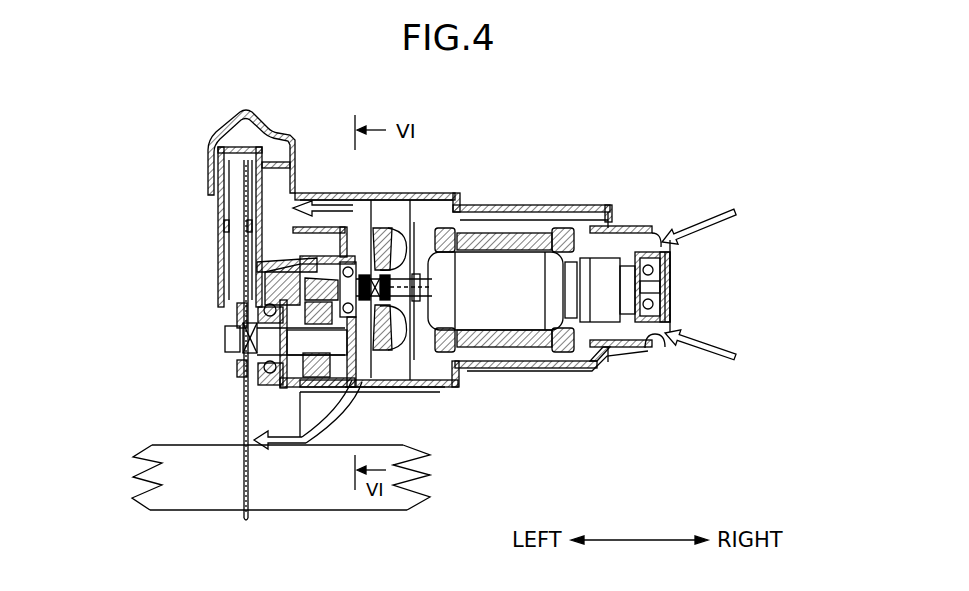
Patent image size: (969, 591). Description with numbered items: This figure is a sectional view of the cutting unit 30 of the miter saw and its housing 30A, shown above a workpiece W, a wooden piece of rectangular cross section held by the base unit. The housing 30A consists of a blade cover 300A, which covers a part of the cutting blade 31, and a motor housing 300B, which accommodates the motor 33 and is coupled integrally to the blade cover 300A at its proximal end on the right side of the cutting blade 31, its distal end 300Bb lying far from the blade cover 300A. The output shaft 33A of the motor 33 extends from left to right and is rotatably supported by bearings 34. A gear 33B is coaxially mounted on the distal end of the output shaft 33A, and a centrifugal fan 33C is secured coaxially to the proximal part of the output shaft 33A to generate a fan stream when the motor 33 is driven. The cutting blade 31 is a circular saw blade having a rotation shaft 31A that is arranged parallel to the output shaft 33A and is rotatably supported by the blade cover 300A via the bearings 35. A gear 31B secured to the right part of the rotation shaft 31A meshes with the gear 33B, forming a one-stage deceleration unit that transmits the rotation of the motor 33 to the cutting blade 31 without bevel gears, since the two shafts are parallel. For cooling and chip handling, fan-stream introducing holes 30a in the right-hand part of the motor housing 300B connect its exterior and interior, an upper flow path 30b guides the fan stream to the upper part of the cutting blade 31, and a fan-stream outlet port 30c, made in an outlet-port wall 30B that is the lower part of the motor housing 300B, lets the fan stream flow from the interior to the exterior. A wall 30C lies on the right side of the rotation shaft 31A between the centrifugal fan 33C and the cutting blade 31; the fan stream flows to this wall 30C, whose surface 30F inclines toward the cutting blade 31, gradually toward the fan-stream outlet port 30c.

The cutting unit 30 is at (635, 121).
The blade cover 300A is at (230, 113).
The upper flow path 30b is at (348, 250).
The bearings 34 is at (342, 262).
The centrifugal fan 33C is at (396, 226).
The output shaft 33A is at (415, 290).
The motor 33 is at (498, 280).
The motor housing 300B is at (590, 207).
The housing 30A is at (624, 229).
The distal end 300Bb is at (673, 286).
The fan-stream introducing holes 30a is at (658, 345).
The surface 30F is at (467, 378).
The outlet-port wall 30B is at (385, 398).
The fan-stream outlet port 30c is at (397, 400).
The gear 33B is at (312, 268).
The bearings 35 is at (265, 273).
The rotation shaft 31A is at (237, 370).
The cutting blade 31 is at (243, 415).
The gear 31B is at (305, 432).
The wall 30C is at (365, 378).
The workpiece W is at (186, 511).